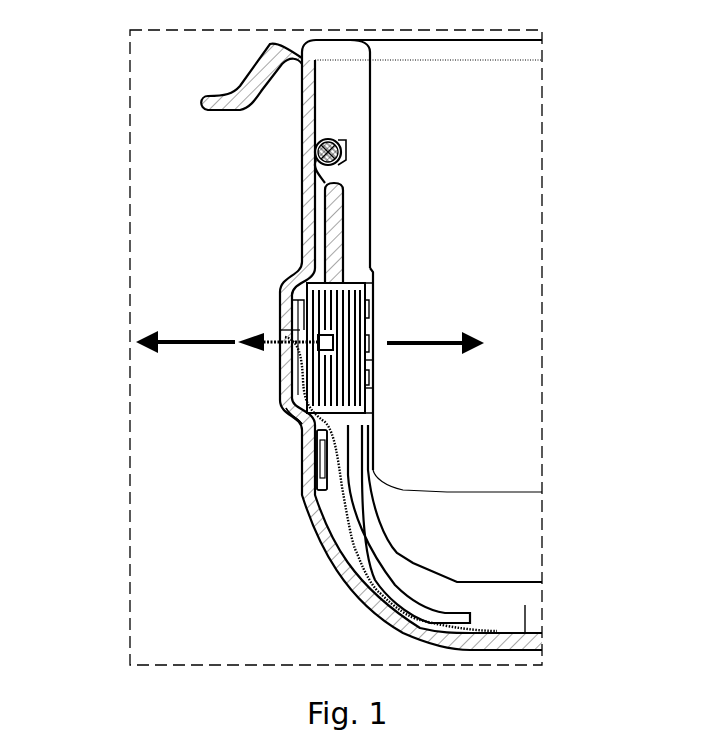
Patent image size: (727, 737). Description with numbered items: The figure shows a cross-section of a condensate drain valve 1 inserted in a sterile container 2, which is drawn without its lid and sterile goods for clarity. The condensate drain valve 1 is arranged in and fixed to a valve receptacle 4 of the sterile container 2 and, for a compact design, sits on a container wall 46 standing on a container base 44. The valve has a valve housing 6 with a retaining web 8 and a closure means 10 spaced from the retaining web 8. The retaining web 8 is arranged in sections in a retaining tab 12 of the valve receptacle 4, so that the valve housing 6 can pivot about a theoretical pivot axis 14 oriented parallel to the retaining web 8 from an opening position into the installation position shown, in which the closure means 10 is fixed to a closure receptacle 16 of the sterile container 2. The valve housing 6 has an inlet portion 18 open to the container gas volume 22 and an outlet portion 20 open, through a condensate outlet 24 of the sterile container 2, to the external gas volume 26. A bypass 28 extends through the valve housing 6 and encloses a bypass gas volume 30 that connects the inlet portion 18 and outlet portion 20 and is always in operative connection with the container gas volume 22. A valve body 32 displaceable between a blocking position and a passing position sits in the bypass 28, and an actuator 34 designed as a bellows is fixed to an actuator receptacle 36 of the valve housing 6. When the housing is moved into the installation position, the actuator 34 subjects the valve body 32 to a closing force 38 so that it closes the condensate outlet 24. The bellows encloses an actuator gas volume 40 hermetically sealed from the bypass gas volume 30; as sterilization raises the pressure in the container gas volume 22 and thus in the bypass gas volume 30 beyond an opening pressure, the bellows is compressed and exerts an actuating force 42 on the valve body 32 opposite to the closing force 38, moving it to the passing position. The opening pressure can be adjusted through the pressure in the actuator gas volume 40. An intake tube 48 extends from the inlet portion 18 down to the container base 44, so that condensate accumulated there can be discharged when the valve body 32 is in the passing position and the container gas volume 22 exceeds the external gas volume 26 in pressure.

The condensate drain valve 1 is at (445, 230).
The sterile container 2 is at (578, 30).
The valve receptacle 4 is at (292, 262).
The valve housing 6 is at (343, 224).
The retaining web 8 is at (340, 142).
The closure means 10 is at (305, 500).
The retaining tab 12 is at (347, 156).
The pivot axis 14 is at (336, 140).
The closure receptacle 16 is at (305, 500).
The inlet portion 18 is at (333, 528).
The outlet portion 20 is at (293, 323).
The container gas volume 22 is at (578, 238).
The condensate outlet 24 is at (270, 332).
The external gas volume 26 is at (100, 160).
The bypass 28 is at (291, 414).
The bypass gas volume 30 is at (291, 414).
The valve body 32 is at (281, 352).
The actuator 34 is at (369, 388).
The actuator receptacle 36 is at (374, 367).
The closing force 38 is at (212, 345).
The actuator gas volume 40 is at (362, 306).
The actuating force 42 is at (417, 342).
The container base 44 is at (538, 622).
The container wall 46 is at (300, 158).
The intake tube 48 is at (376, 606).